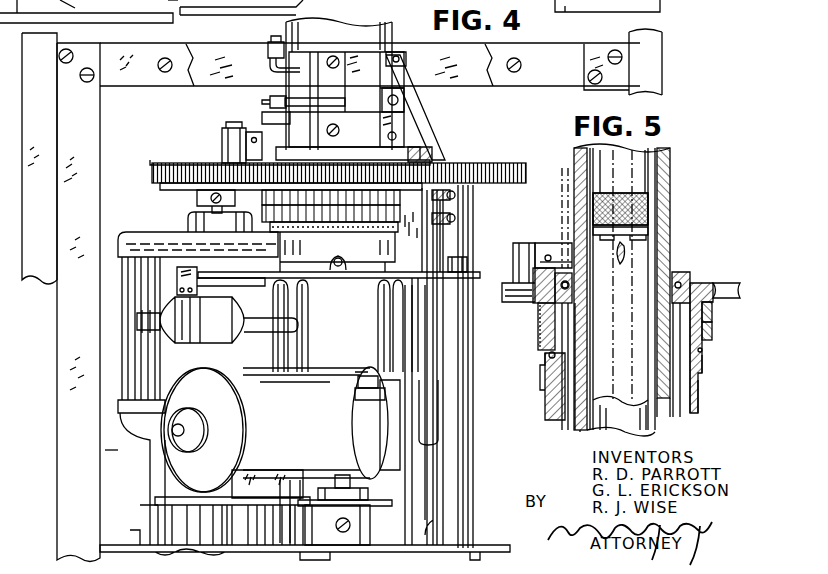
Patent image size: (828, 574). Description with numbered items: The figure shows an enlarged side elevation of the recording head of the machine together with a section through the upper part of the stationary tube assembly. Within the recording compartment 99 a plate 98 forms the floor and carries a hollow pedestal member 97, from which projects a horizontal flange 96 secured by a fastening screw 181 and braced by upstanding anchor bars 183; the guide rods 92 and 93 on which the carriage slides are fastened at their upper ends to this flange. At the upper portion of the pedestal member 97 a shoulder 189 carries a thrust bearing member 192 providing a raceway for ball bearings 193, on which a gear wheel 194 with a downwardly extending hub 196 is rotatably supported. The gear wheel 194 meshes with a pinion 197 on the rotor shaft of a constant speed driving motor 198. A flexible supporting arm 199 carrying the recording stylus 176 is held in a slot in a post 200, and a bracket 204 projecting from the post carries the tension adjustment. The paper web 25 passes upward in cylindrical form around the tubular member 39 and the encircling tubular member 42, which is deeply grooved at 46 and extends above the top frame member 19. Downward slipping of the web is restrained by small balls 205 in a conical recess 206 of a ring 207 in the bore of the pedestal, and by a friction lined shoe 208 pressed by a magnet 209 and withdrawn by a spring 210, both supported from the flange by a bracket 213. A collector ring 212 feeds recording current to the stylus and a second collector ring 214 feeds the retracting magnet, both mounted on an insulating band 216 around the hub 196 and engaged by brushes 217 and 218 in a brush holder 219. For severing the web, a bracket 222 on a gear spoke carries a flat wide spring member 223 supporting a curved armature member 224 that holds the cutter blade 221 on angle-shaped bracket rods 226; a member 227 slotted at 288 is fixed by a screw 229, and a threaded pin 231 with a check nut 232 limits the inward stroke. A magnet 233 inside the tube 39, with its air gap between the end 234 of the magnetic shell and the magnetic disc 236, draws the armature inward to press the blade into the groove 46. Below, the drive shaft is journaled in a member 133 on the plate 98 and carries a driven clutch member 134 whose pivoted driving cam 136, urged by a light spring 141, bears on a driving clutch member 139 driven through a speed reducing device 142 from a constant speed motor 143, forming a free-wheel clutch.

In FIG. 4, the top frame member 19 is at (216, 8).
In FIG. 4, the paper web 25 is at (378, 26).
In FIG. 5, the paper web 25 is at (580, 430).
In FIG. 5, the tubular member 39 is at (618, 400).
In FIG. 5, the encircling tubular member 42 is at (670, 150).
In FIG. 5, the groove 46 is at (670, 162).
In FIG. 4, the guide rod 92 is at (200, 363).
In FIG. 4, the guide rod 93 is at (468, 396).
In FIG. 4, the horizontal flange 96 is at (436, 285).
In FIG. 4, the pedestal member 97 is at (410, 345).
In FIG. 5, the pedestal member 97 is at (546, 388).
In FIG. 4, the plate 98 is at (120, 545).
In FIG. 4, the recording compartment 99 is at (112, 450).
In FIG. 4, the journal member 133 is at (368, 540).
In FIG. 4, the driven clutch member 134 is at (385, 518).
In FIG. 4, the driving cam 136 is at (372, 504).
In FIG. 4, the driving clutch member 139 is at (322, 478).
In FIG. 4, the spring 141 is at (352, 495).
In FIG. 4, the speed reducing device 142 is at (362, 378).
In FIG. 4, the constant speed motor 143 is at (352, 362).
In FIG. 4, the recording stylus 176 is at (371, 137).
In FIG. 4, the fastening screw 181 is at (326, 278).
In FIG. 4, the anchor bar 183 is at (248, 372).
In FIG. 5, the shoulder 189 is at (700, 390).
In FIG. 5, the thrust bearing member 192 is at (704, 370).
In FIG. 5, the ball bearings 193 is at (704, 348).
In FIG. 4, the gear wheel 194 is at (488, 168).
In FIG. 5, the gear wheel 194 is at (736, 278).
In FIG. 5, the hub 196 is at (542, 330).
In FIG. 4, the pinion 197 is at (200, 190).
In FIG. 4, the driving motor 198 is at (122, 272).
In FIG. 4, the flexible supporting arm 199 is at (222, 136).
In FIG. 5, the flexible supporting arm 199 is at (548, 243).
In FIG. 4, the post 200 is at (224, 156).
In FIG. 5, the post 200 is at (514, 255).
In FIG. 4, the bracket 204 is at (281, 125).
In FIG. 5, the bracket 204 is at (543, 243).
In FIG. 5, the balls 205 is at (678, 272).
In FIG. 5, the conical recess 206 is at (570, 288).
In FIG. 5, the ring 207 is at (660, 302).
In FIG. 4, the friction lined shoe 208 is at (320, 247).
In FIG. 4, the magnet 209 is at (232, 333).
In FIG. 4, the spring 210 is at (162, 312).
In FIG. 4, the collector ring 212 is at (356, 197).
In FIG. 5, the collector ring 212 is at (724, 310).
In FIG. 4, the bracket 213 is at (188, 262).
In FIG. 4, the second collector ring 214 is at (356, 215).
In FIG. 5, the second collector ring 214 is at (713, 327).
In FIG. 5, the band of insulating material 216 is at (549, 355).
In FIG. 4, the brush 217 is at (455, 195).
In FIG. 4, the brush 218 is at (455, 217).
In FIG. 4, the brush holder 219 is at (444, 243).
In FIG. 4, the cutter blade 221 is at (272, 46).
In FIG. 4, the bracket 222 is at (432, 152).
In FIG. 4, the flat wide spring member 223 is at (412, 124).
In FIG. 4, the curved armature member 224 is at (316, 62).
In FIG. 5, the curved armature member 224 is at (562, 196).
In FIG. 4, the angle-shaped bracket rods 226 is at (286, 72).
In FIG. 4, the slotted member 227 is at (353, 97).
In FIG. 4, the screw 229 is at (404, 98).
In FIG. 4, the threaded pin 231 is at (286, 100).
In FIG. 4, the check nut 232 is at (270, 108).
In FIG. 5, the magnet 233 is at (688, 125).
In FIG. 5, the end of magnetic shell 234 is at (622, 195).
In FIG. 5, the magnetic disc 236 is at (650, 228).
In FIG. 4, the slot 288 is at (368, 121).